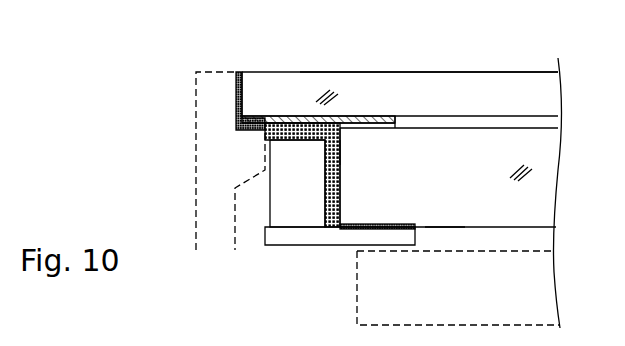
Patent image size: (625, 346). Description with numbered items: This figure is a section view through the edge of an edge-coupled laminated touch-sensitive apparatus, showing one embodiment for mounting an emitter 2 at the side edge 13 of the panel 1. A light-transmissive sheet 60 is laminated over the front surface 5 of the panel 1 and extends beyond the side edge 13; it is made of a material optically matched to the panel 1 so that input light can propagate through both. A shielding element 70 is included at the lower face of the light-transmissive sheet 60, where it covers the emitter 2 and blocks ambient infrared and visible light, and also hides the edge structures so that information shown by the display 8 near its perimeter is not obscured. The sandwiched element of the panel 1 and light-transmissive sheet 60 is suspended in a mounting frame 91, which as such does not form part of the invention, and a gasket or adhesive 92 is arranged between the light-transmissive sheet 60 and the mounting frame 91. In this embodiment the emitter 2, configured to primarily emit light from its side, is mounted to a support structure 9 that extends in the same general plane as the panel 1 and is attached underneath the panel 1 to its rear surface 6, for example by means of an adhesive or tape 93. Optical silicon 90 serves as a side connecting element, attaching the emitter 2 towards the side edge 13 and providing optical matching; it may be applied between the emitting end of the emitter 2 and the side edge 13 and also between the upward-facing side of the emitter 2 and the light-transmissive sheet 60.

The front surface 5 is at (516, 62).
The light-transmissive sheet 60 is at (400, 94).
The optical silicon 90 is at (310, 128).
The shielding element 70 is at (351, 120).
The gasket or adhesive 92 is at (236, 60).
The emitter 2 is at (297, 183).
The panel 1 is at (449, 177).
The side edge 13 is at (356, 152).
The adhesive or tape 93 is at (373, 227).
The support structure 9 is at (298, 238).
The rear surface 6 is at (443, 244).
The display 8 is at (458, 288).
The mounting frame 91 is at (208, 162).